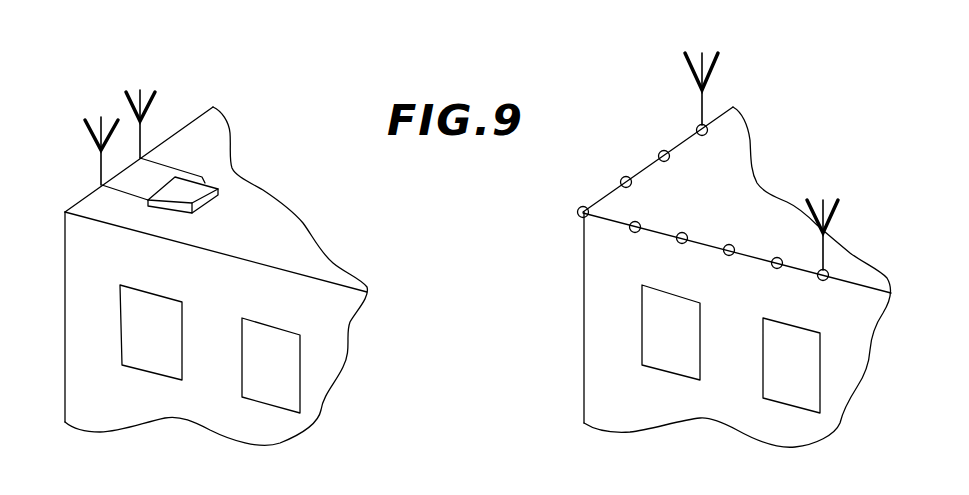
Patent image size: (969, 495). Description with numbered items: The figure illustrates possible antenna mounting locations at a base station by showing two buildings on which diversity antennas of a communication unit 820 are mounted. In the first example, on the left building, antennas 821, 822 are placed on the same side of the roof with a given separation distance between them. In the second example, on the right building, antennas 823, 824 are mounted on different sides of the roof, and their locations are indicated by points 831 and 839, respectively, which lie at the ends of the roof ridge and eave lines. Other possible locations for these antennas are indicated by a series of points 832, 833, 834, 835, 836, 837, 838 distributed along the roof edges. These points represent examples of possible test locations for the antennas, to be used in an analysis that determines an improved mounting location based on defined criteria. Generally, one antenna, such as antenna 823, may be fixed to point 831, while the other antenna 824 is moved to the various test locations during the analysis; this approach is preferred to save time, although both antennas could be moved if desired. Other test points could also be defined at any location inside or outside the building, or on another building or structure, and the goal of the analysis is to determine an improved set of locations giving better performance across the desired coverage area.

The communication unit 820 is at (207, 189).
The antenna 821 is at (83, 124).
The antenna 822 is at (124, 97).
The antenna 823 is at (688, 64).
The antenna 824 is at (843, 212).
The antenna location 831 is at (705, 136).
The possible antenna location 832 is at (660, 151).
The possible antenna location 833 is at (622, 178).
The possible antenna location 834 is at (580, 208).
The possible antenna location 835 is at (632, 232).
The possible antenna location 836 is at (678, 245).
The possible antenna location 837 is at (725, 257).
The possible antenna location 838 is at (772, 268).
The antenna location 839 is at (818, 282).